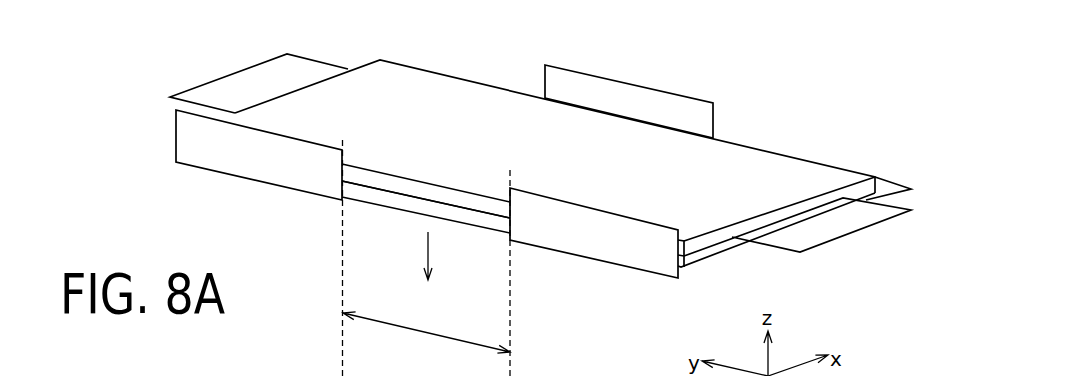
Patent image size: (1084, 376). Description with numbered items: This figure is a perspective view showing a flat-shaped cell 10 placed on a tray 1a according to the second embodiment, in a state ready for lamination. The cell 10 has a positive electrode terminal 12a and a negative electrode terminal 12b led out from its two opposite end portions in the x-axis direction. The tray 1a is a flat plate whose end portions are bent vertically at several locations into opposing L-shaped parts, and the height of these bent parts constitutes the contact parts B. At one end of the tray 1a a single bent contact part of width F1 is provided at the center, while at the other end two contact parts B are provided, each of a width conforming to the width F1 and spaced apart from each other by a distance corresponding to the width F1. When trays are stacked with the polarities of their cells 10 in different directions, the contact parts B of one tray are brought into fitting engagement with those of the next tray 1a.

The flat-shaped cell 10 is at (455, 200).
The tray 1a is at (388, 200).
The positive electrode terminal 12a is at (262, 82).
The negative electrode terminal 12b is at (823, 227).
The contact part B is at (176, 143).
The width F1 is at (427, 258).